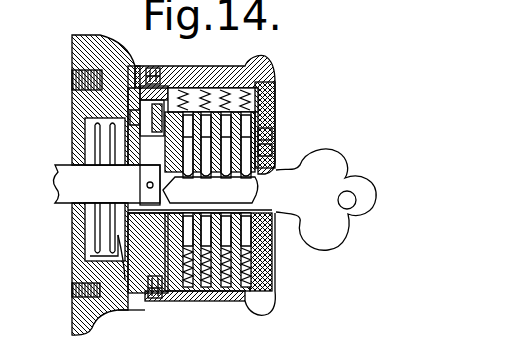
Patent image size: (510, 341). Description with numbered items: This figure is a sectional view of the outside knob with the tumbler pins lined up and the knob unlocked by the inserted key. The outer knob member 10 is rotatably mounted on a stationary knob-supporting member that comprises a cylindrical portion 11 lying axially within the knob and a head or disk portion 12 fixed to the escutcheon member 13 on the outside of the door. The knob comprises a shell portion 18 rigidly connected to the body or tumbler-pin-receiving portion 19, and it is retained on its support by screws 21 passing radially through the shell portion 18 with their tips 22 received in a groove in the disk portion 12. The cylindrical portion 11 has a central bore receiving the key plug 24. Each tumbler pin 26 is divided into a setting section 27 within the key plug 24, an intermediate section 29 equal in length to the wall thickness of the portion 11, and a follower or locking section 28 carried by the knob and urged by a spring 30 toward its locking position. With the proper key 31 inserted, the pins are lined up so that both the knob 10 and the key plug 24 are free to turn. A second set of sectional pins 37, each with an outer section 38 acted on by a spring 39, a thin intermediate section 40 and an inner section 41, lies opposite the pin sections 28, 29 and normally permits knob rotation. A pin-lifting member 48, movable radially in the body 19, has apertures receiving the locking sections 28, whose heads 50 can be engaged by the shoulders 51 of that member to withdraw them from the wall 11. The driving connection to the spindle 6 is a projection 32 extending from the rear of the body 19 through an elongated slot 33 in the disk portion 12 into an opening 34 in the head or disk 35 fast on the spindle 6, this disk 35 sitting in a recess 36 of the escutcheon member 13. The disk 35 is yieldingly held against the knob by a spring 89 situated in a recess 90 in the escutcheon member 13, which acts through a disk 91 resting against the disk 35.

The spindle 6 is at (85, 176).
The outer knob member 10 is at (262, 65).
The cylindrical portion 11 is at (276, 209).
The head or disk portion 12 is at (162, 286).
The escutcheon member 13 is at (72, 312).
The shell portion 18 is at (206, 301).
The body or tumbler-pin-receiving portion 19 is at (268, 302).
The screws 21 is at (153, 74).
The tips 22 is at (163, 84).
The key plug 24 is at (284, 167).
The tumbler pins 26 is at (270, 115).
The setting section 27 is at (262, 179).
The follower or locking section 28 is at (280, 138).
The intermediate section 29 is at (275, 147).
The spring 30 is at (222, 96).
The key 31 is at (335, 178).
The projection 32 is at (143, 117).
The elongated opening or slot 33 is at (145, 142).
The opening 34 is at (120, 115).
The head or disk 35 is at (133, 268).
The recess 36 is at (133, 110).
The sectional pins 37 is at (276, 265).
The outer section 38 is at (276, 282).
The spring 39 is at (236, 312).
The thin intermediate section 40 is at (276, 248).
The inner section 41 is at (276, 235).
The pin-lifting member 48 is at (272, 103).
The heads 50 is at (205, 118).
The shoulders 51 is at (278, 125).
The spring 89 is at (92, 214).
The recess 90 is at (100, 248).
The disk 91 is at (117, 265).